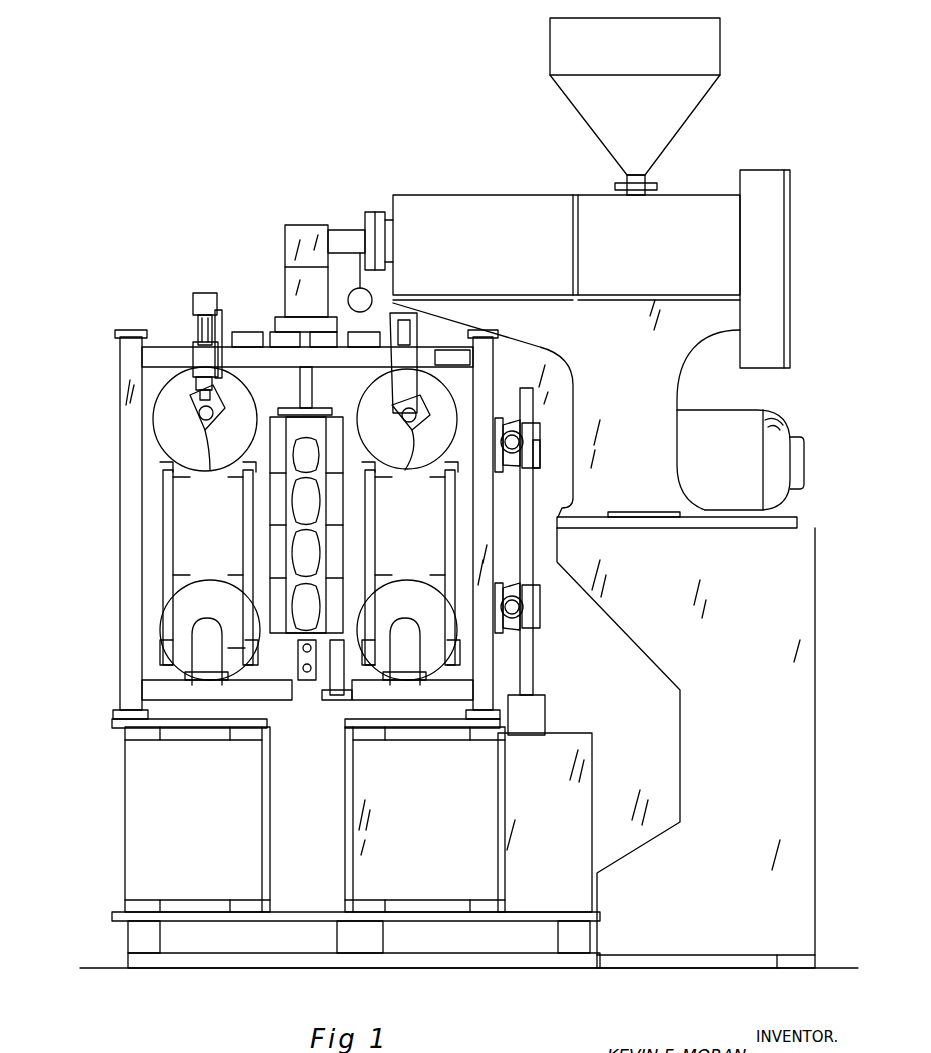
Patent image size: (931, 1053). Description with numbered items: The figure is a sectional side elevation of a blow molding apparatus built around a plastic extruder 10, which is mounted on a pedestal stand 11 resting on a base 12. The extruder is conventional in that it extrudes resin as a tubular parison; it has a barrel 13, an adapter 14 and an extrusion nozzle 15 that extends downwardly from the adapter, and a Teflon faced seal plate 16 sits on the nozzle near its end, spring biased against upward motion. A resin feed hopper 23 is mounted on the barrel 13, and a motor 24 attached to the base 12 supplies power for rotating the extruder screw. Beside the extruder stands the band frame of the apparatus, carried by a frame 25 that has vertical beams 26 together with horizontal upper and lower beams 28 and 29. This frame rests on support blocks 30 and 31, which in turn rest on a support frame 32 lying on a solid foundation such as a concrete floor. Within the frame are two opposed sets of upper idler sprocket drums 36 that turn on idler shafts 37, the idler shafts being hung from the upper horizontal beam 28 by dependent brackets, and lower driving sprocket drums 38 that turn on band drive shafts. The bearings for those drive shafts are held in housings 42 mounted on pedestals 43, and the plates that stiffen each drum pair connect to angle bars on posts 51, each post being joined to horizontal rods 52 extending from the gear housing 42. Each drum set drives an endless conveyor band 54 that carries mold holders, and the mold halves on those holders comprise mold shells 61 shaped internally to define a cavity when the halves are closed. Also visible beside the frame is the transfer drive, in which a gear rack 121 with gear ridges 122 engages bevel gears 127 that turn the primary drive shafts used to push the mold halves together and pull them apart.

The plastic extruder 10 is at (530, 192).
The pedestal stand 11 is at (680, 387).
The base 12 is at (818, 690).
The barrel 13 is at (678, 196).
The adapter 14 is at (336, 230).
The extrusion nozzle 15 is at (312, 392).
The seal plate 16 is at (278, 413).
The resin feed hopper 23 is at (720, 45).
The motor 24 is at (792, 425).
The frame 25 is at (157, 346).
The vertical beams 26 is at (113, 374).
The horizontal upper beam 28 is at (175, 347).
The horizontal lower beam 29 is at (445, 702).
The support block 30 is at (235, 826).
The support block 31 is at (388, 866).
The support frame 32 is at (573, 937).
The upper idler sprocket drums 36 is at (375, 397).
The idler shafts 37 is at (215, 435).
The lower driving sprocket drums 38 is at (178, 663).
The housings 42 is at (213, 690).
The pedestals 43 is at (200, 688).
The posts 51 is at (163, 650).
The horizontal rods 52 is at (235, 648).
The endless conveyor bands 54 is at (253, 537).
The mold shells 61 is at (300, 408).
The gear rack 121 is at (535, 656).
The gear ridges 122 is at (532, 422).
The bevel gears 127 is at (540, 456).